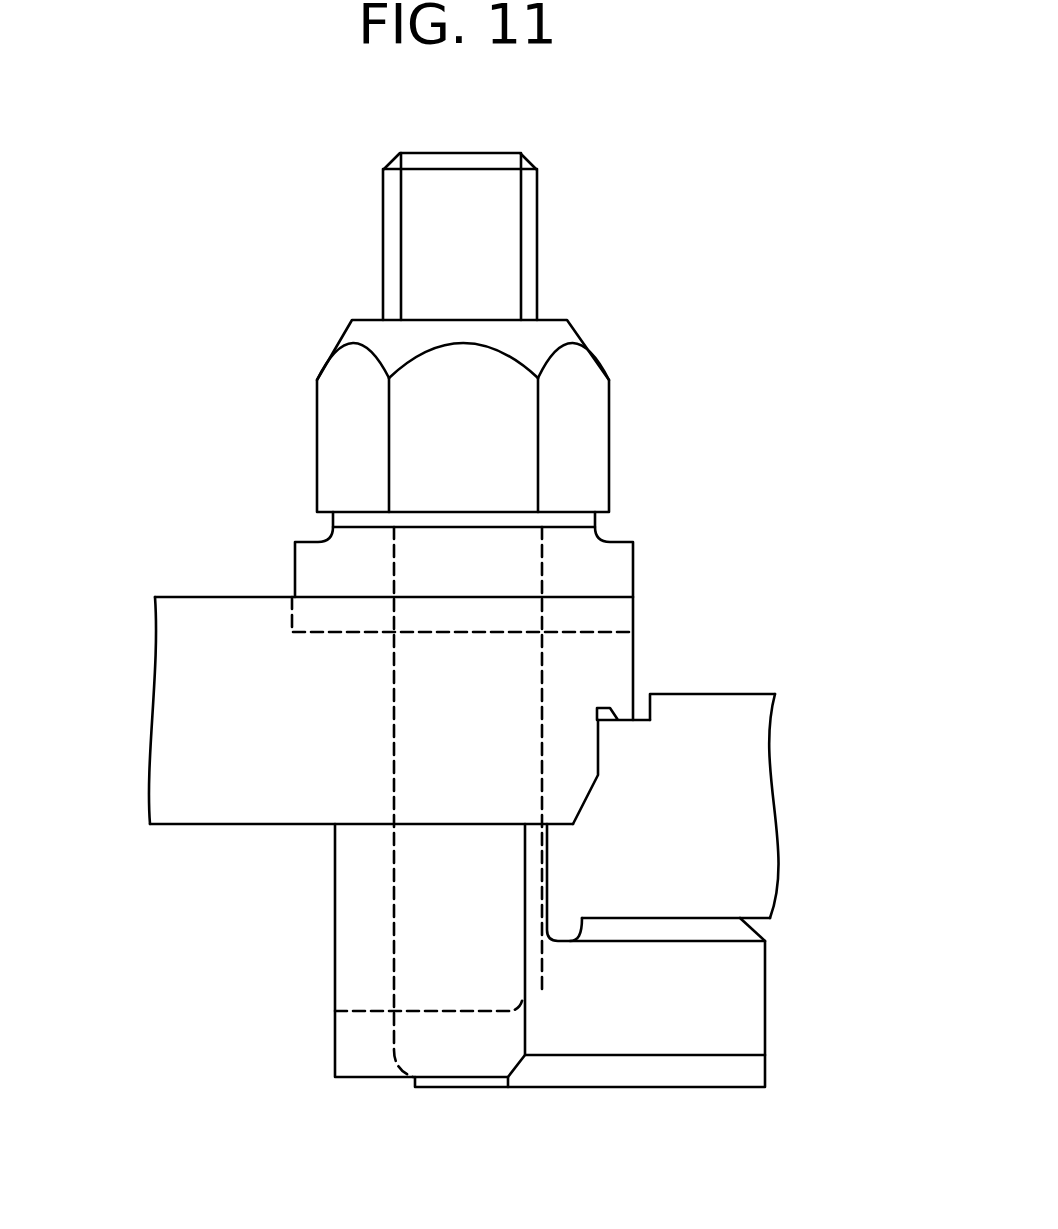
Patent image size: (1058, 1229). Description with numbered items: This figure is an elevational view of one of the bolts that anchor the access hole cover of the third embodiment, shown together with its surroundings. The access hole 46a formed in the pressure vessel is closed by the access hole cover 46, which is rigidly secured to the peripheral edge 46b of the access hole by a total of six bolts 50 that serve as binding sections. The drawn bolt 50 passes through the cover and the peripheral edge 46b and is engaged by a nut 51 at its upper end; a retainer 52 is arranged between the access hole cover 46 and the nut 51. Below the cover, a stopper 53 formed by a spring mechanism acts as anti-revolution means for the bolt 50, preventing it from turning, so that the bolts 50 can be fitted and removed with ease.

The nut 51 is at (583, 410).
The retainer 52 is at (597, 562).
The access hole cover 46 is at (205, 722).
The peripheral edge 46b is at (747, 797).
The stopper 53 is at (352, 930).
The bolt 50 is at (686, 1028).
The access hole 46a is at (220, 1072).